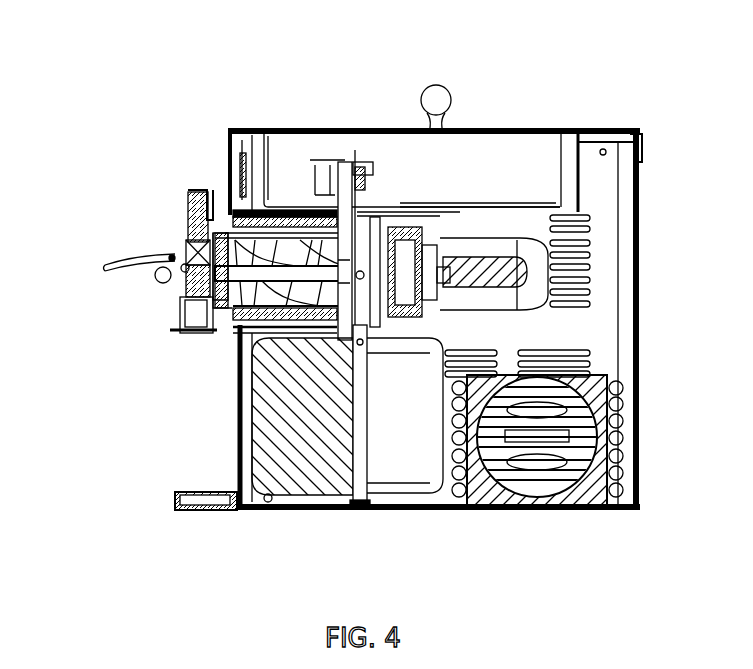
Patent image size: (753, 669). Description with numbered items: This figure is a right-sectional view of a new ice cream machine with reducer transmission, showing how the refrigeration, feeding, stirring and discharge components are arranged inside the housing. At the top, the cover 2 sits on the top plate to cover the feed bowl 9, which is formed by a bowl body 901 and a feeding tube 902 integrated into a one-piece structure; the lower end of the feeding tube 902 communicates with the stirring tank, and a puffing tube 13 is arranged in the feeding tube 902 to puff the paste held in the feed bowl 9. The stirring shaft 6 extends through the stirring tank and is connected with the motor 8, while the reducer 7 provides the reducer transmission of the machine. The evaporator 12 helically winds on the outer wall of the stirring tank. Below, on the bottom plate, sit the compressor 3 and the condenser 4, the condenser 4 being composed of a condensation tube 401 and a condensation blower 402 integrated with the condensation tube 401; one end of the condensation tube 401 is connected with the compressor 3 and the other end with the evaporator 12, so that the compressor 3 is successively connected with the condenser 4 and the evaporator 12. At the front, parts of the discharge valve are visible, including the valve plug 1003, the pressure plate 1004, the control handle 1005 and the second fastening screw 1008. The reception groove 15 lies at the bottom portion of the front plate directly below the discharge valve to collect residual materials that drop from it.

The cover 2 is at (233, 128).
The evaporator 12 is at (262, 275).
The stirring shaft 6 is at (222, 225).
The puffing tube 13 is at (345, 190).
The feed bowl 9 is at (435, 109).
The bowl body 901 is at (500, 183).
The feeding tube 902 is at (415, 197).
The reducer 7 is at (513, 218).
The motor 8 is at (532, 277).
The compressor 3 is at (365, 508).
The condenser 4 is at (537, 495).
The condensation tube 401 is at (616, 477).
The condensation blower 402 is at (500, 455).
The reception groove 15 is at (230, 508).
The pressure plate 1004 is at (203, 190).
The valve plug 1003 is at (188, 203).
The second fastening screw 1008 is at (190, 214).
The control handle 1005 is at (110, 262).